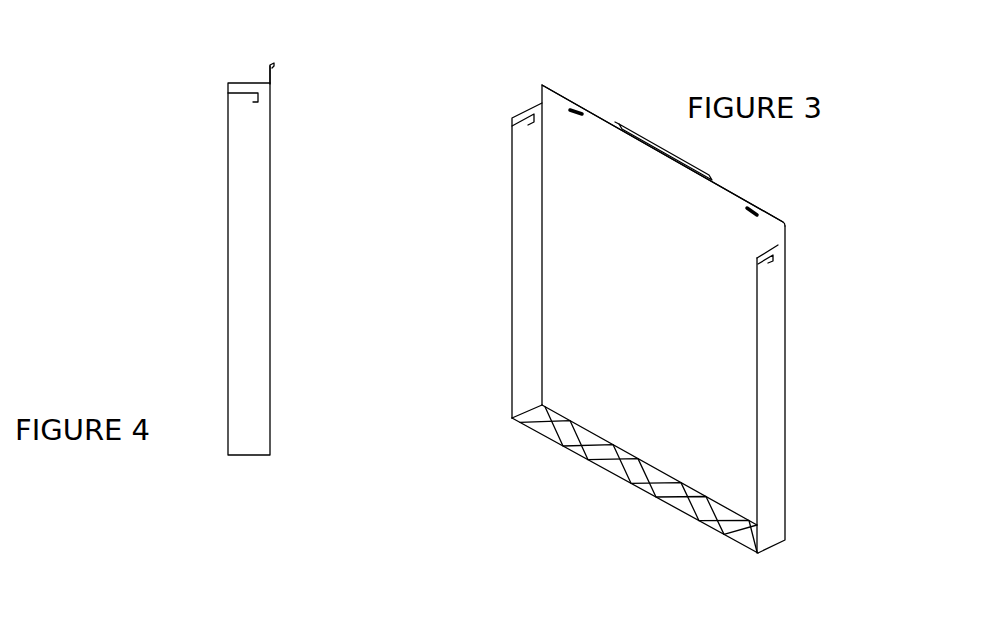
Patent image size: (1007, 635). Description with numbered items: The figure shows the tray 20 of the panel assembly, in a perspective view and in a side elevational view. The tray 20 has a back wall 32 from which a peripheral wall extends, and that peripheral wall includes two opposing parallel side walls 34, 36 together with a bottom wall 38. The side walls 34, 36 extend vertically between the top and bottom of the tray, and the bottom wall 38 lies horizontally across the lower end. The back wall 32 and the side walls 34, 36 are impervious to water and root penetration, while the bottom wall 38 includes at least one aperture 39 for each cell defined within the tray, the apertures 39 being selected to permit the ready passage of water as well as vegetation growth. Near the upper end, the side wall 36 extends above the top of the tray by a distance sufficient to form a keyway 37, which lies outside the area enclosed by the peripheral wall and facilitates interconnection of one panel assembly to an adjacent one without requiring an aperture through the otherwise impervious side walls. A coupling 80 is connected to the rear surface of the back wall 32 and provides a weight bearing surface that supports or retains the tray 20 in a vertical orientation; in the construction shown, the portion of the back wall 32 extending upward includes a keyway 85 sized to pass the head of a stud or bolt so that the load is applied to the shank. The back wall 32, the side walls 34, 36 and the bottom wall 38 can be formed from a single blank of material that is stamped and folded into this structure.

In FIG. 4, the tray 20 is at (193, 216).
In FIG. 3, the tray 20 is at (516, 437).
In FIG. 3, the back wall 32 is at (663, 316).
In FIG. 3, the side wall 34 is at (520, 250).
In FIG. 4, the side wall 36 is at (265, 330).
In FIG. 3, the side wall 36 is at (770, 387).
In FIG. 4, the keyway 37 is at (248, 103).
In FIG. 3, the keyway 37 is at (778, 246).
In FIG. 3, the bottom wall 38 is at (666, 498).
In FIG. 3, the aperture 39 is at (655, 480).
In FIG. 4, the coupling 80 is at (272, 72).
In FIG. 3, the coupling 80 is at (670, 153).
In FIG. 3, the keyway 85 is at (760, 205).